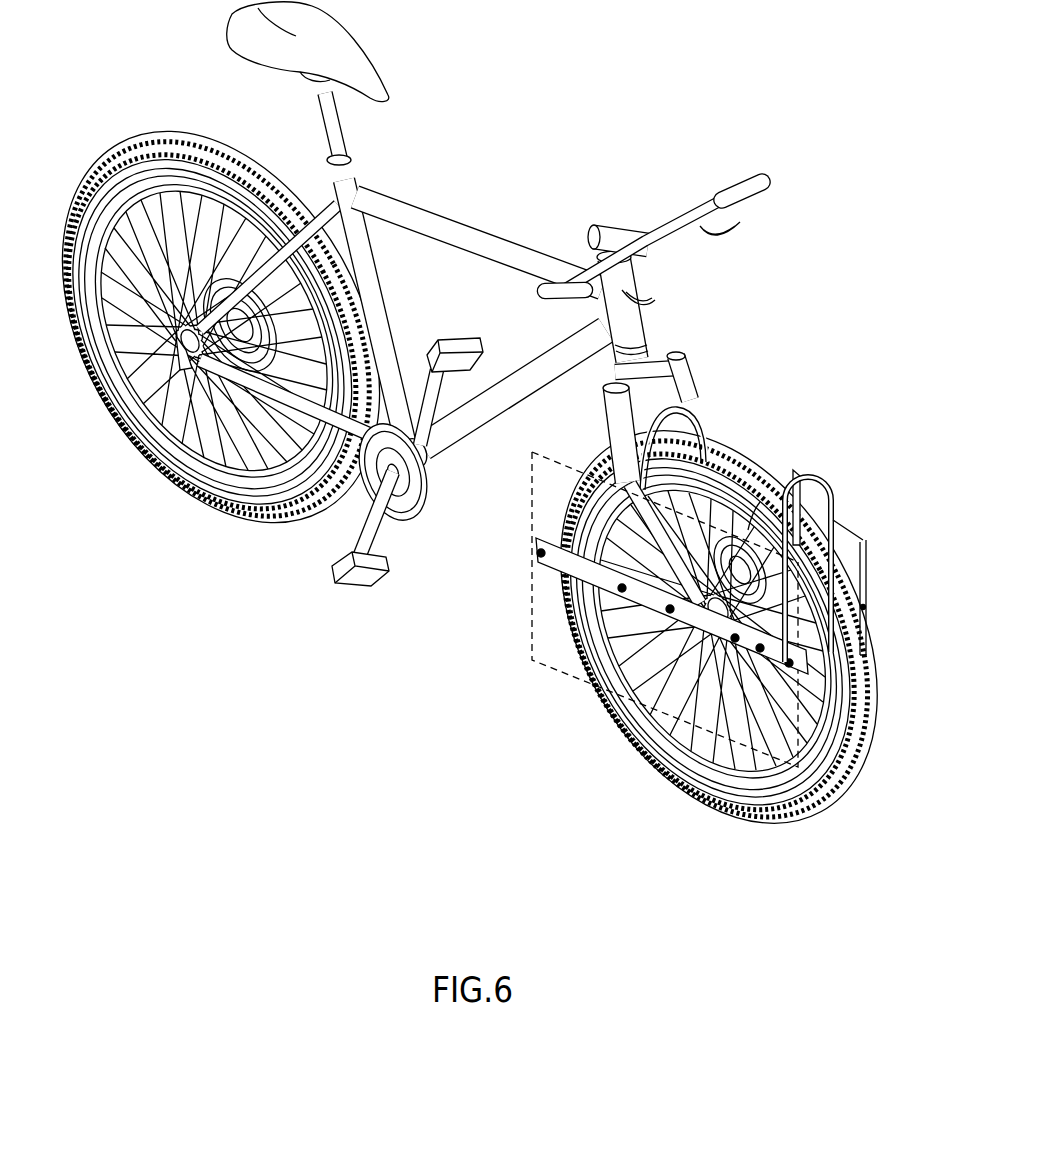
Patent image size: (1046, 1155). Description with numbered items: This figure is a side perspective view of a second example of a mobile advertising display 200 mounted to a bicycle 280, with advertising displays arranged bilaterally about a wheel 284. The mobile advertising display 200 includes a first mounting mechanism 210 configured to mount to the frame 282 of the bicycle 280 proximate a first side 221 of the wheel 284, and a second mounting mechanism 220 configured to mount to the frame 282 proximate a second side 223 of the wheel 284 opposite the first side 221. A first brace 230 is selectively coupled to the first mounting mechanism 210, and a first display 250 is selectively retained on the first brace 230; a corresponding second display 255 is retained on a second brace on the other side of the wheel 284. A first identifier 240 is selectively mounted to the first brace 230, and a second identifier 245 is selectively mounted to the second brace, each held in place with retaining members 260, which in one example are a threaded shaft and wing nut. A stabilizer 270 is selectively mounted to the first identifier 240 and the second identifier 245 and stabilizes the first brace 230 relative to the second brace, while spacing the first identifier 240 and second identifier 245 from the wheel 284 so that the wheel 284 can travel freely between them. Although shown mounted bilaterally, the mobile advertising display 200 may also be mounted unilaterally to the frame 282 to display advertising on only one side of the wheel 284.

The mobile advertising display 200 is at (703, 512).
The first mounting mechanism 210 is at (742, 652).
The second mounting mechanism 220 is at (597, 452).
The first side 221 is at (775, 808).
The second side 223 is at (845, 800).
The first brace 230 is at (556, 572).
The first identifier 240 is at (750, 525).
The second identifier 245 is at (802, 474).
The first display 250 is at (543, 657).
The second display 255 is at (864, 540).
The retaining members 260 is at (537, 555).
The stabilizer 270 is at (833, 493).
The bicycle 280 is at (381, 302).
The frame 282 is at (684, 390).
The wheel 284 is at (875, 702).